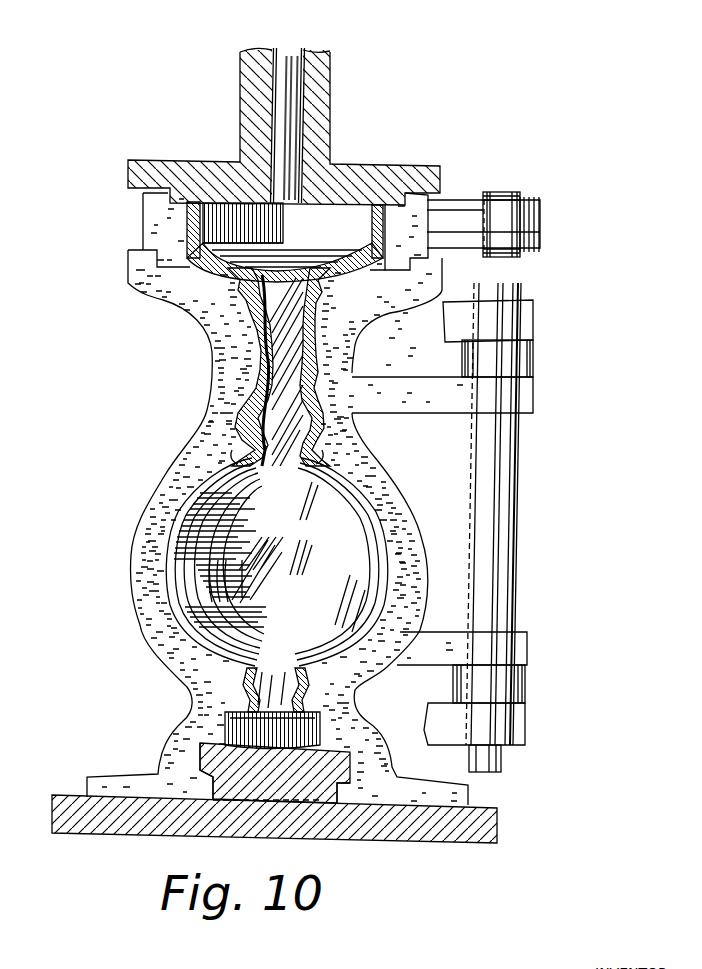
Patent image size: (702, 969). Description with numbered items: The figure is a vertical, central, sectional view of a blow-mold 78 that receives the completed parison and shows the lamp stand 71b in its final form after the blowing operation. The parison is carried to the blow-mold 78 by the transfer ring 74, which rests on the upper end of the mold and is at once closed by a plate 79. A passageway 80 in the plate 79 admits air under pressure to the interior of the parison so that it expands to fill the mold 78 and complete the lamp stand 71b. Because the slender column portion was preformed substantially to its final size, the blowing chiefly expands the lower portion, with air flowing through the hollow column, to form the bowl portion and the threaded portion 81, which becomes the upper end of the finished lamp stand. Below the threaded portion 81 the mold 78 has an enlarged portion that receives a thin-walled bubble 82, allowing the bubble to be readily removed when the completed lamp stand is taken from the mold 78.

The passageway 80 is at (298, 124).
The plate 79 is at (385, 177).
The transfer ring 74 is at (408, 222).
The blow-mold 78 is at (227, 367).
The lamp stand 71b is at (353, 487).
The threaded portion 81 is at (242, 694).
The bubble 82 is at (222, 727).